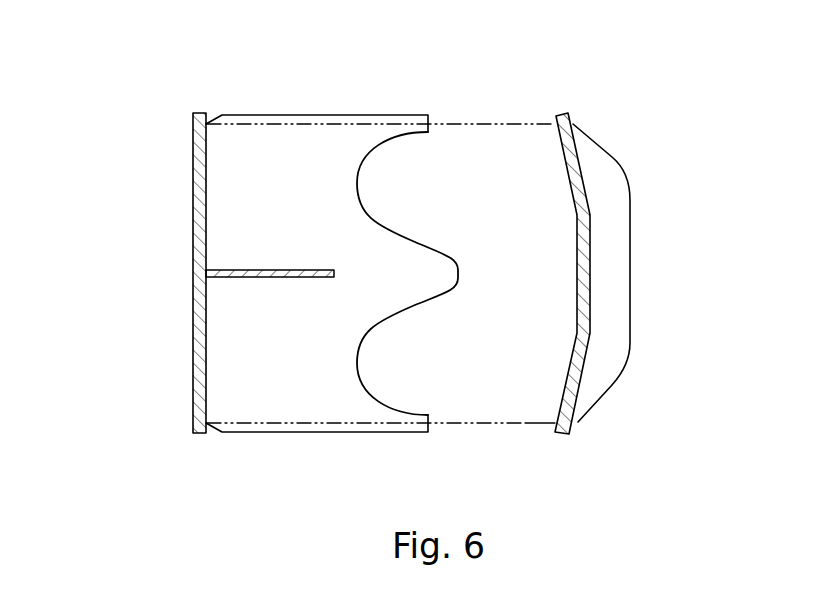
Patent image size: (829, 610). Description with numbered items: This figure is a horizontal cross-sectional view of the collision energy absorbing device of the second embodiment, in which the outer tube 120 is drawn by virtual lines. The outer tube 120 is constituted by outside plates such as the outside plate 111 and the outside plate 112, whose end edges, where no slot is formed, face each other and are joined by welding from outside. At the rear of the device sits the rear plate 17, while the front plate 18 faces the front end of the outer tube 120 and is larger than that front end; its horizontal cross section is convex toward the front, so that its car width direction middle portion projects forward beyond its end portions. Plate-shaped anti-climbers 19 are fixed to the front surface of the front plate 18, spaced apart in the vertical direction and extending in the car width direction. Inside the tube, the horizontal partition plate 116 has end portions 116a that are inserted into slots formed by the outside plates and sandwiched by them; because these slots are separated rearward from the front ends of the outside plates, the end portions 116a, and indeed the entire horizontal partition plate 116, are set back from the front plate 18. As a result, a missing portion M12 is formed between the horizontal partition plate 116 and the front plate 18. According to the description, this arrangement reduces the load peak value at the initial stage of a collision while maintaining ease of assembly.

The rear plate 17 is at (193, 160).
The horizontal partition plate 116 is at (400, 112).
The end portions 116a is at (311, 113).
The outside plate 112 is at (480, 122).
The outside plate 111 is at (445, 428).
The outer tube 120 is at (523, 428).
The missing portion M12 is at (517, 208).
The front plate 18 is at (585, 168).
The anti-climbers 19 is at (628, 200).